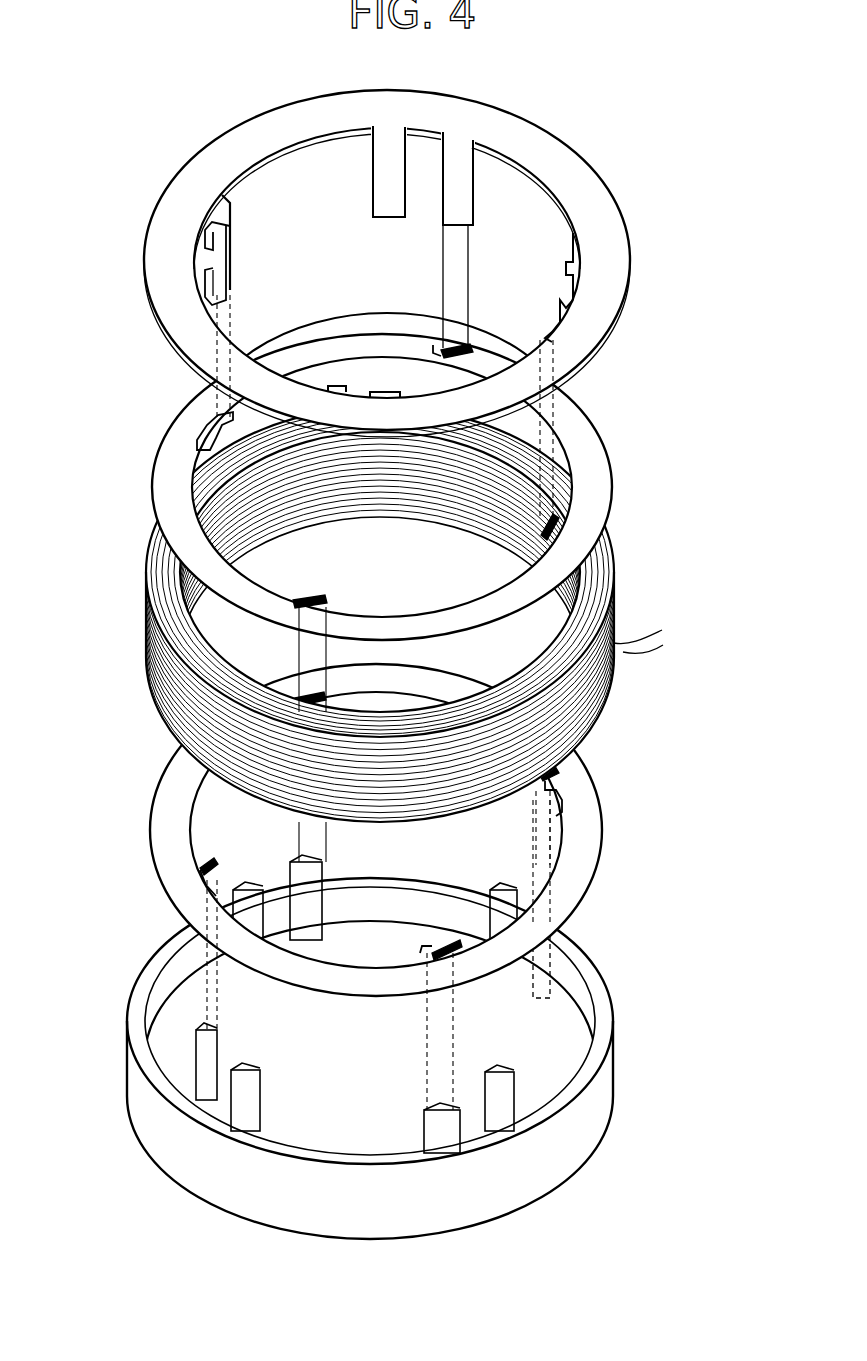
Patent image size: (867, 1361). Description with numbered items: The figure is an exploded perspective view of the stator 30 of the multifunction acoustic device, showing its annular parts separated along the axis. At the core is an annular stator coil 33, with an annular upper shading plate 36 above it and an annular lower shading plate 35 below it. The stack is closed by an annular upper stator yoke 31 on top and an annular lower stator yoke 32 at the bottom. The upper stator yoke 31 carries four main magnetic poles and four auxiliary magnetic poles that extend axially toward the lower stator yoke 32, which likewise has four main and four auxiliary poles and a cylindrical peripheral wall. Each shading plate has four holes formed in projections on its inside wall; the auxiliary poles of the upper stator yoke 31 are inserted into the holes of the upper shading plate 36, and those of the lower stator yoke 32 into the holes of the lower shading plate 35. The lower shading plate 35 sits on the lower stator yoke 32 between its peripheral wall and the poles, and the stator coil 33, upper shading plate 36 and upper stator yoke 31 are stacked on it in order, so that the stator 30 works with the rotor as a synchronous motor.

The stator 30 is at (648, 250).
The upper stator yoke 31 is at (376, 315).
The lower stator yoke 32 is at (374, 1077).
The stator coil 33 is at (582, 607).
The lower shading plate 35 is at (369, 830).
The upper shading plate 36 is at (383, 487).